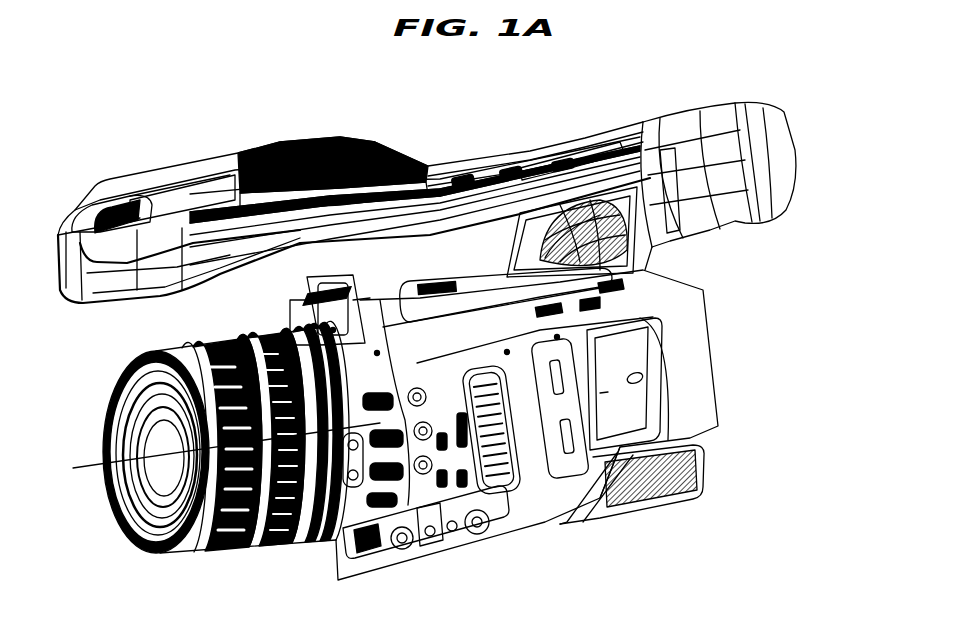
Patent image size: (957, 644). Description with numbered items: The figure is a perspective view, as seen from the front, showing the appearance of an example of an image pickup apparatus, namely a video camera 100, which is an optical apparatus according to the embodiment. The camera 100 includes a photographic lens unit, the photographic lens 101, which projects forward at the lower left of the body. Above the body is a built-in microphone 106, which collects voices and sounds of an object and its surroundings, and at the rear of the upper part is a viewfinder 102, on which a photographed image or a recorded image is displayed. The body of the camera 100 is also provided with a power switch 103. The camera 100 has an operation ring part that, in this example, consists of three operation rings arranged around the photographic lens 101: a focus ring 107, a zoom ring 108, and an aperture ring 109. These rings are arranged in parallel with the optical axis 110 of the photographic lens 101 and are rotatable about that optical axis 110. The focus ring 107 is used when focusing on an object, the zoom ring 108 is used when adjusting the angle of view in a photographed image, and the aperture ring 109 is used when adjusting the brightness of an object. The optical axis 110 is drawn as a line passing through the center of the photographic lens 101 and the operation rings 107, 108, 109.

The camera 100 is at (813, 47).
The photographic lens 101 is at (150, 445).
The viewfinder 102 is at (688, 116).
The power switch 103 is at (610, 286).
The built-in microphone 106 is at (108, 178).
The focus ring 107 is at (220, 553).
The zoom ring 108 is at (265, 542).
The aperture ring 109 is at (312, 525).
The optical axis 110 is at (93, 480).